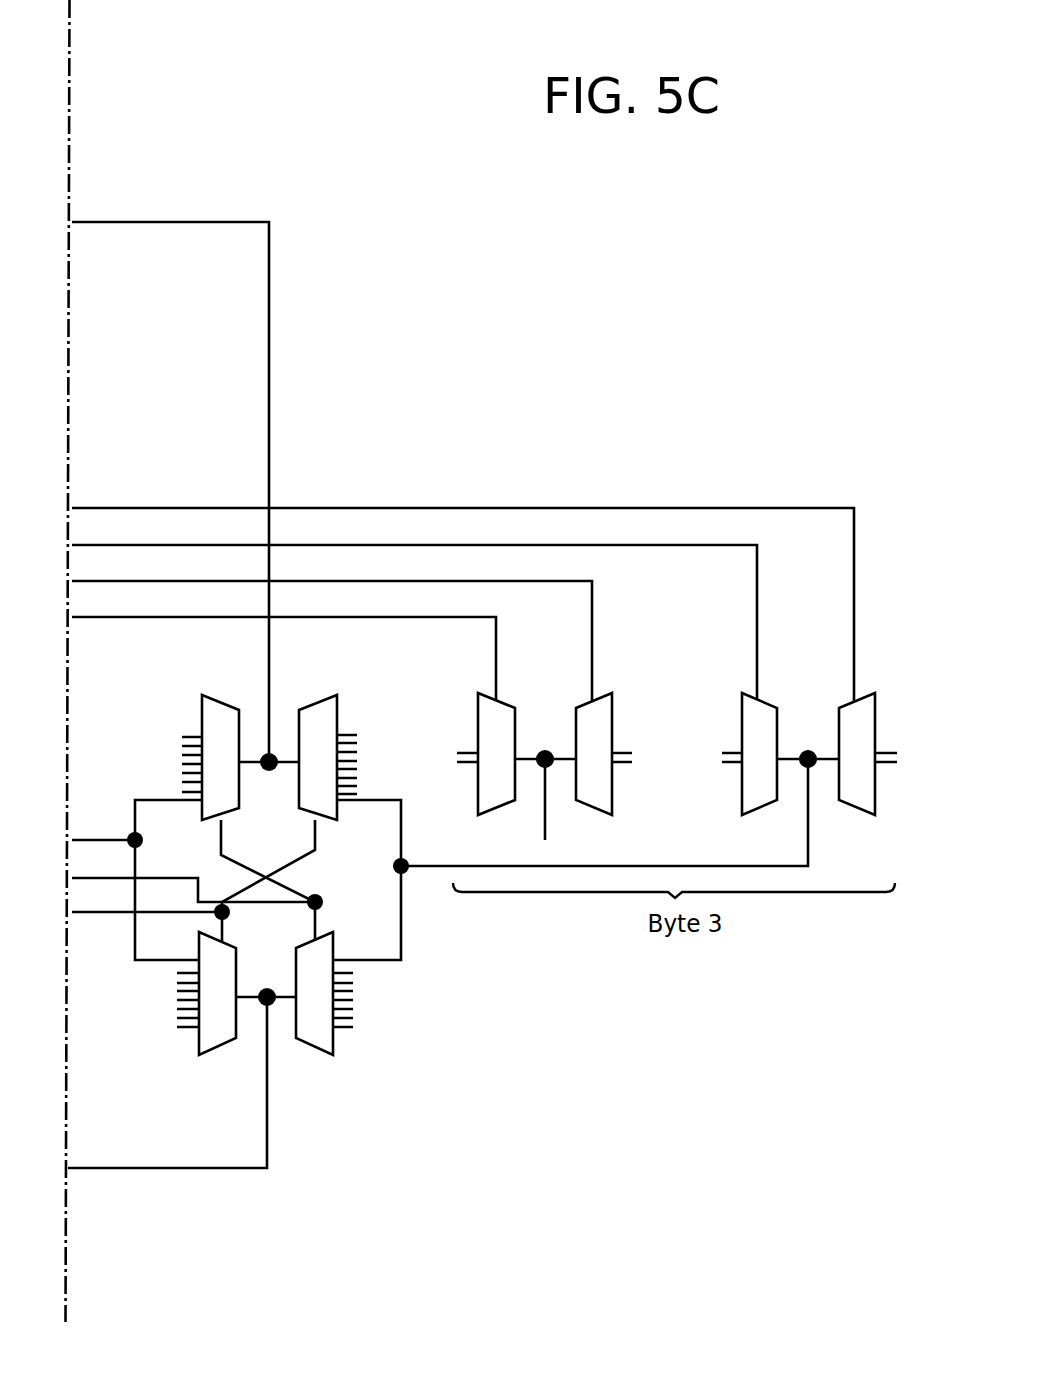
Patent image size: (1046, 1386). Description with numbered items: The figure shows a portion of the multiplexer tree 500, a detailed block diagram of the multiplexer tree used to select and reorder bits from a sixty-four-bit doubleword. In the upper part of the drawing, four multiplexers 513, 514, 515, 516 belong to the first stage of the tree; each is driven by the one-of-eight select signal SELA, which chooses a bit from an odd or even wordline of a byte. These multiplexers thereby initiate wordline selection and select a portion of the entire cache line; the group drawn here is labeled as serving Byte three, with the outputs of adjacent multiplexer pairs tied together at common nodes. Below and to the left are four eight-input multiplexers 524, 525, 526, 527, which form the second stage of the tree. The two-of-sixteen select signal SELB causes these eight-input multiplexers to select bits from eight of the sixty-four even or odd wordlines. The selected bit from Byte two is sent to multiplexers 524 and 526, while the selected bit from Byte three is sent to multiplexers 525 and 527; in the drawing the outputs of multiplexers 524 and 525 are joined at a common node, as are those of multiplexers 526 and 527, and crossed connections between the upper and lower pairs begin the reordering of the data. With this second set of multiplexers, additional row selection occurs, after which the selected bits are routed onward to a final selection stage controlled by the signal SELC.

The multiplexer tree 500 is at (655, 278).
The multiplexer 513 is at (512, 708).
The multiplexer 514 is at (612, 708).
The multiplexer 515 is at (776, 708).
The multiplexer 516 is at (878, 708).
The 8-input multiplexer 524 is at (227, 707).
The 8-input multiplexer 525 is at (313, 707).
The 8-input multiplexer 526 is at (223, 1040).
The 8-input multiplexer 527 is at (308, 1042).